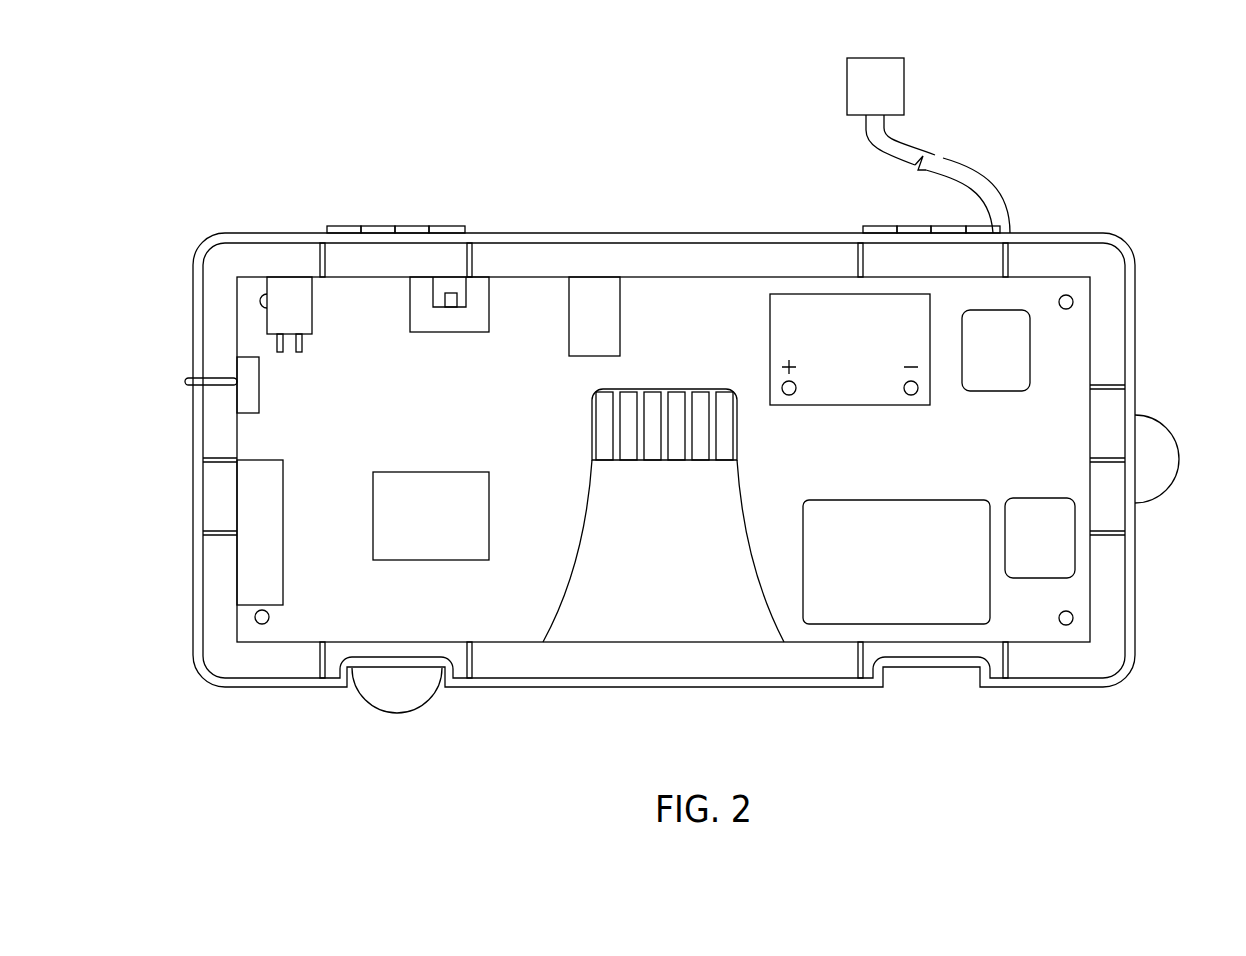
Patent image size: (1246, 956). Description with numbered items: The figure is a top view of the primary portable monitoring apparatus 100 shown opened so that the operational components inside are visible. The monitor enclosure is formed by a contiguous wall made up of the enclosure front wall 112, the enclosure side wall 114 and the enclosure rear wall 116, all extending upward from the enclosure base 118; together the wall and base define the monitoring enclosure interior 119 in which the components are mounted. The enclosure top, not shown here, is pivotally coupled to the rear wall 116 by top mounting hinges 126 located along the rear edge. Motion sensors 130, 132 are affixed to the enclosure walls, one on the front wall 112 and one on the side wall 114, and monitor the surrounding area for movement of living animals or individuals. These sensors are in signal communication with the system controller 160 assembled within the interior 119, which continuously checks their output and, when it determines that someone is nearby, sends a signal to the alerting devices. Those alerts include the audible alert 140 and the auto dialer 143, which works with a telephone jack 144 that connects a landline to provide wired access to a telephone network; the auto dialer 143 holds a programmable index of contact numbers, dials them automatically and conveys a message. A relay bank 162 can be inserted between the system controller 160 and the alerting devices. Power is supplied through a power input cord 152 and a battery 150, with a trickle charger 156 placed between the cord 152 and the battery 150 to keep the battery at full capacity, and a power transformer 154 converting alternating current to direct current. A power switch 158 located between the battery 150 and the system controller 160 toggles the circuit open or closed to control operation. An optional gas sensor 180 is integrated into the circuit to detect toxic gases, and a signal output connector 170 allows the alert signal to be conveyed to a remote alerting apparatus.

The primary portable monitoring apparatus 100 is at (199, 180).
The enclosure front wall 112 is at (663, 687).
The enclosure side wall 114 is at (1135, 595).
The enclosure rear wall 116 is at (664, 233).
The enclosure base 118 is at (500, 431).
The monitoring enclosure interior 119 is at (674, 304).
The top mounting hinge 126 is at (383, 226).
The motion sensor 130 is at (372, 705).
The motion sensor 132 is at (1170, 427).
The audible alert 140 is at (745, 515).
The auto dialer 143 is at (897, 500).
The telephone jack 144 is at (489, 310).
The battery 150 is at (770, 349).
The power input cord 152 is at (904, 86).
The power transformer 154 is at (1040, 498).
The trickle charger 156 is at (996, 391).
The power switch 158 is at (259, 385).
The system controller 160 is at (283, 530).
The relay bank 162 is at (489, 512).
The signal output connector 170 is at (312, 306).
The gas sensor 180 is at (620, 334).